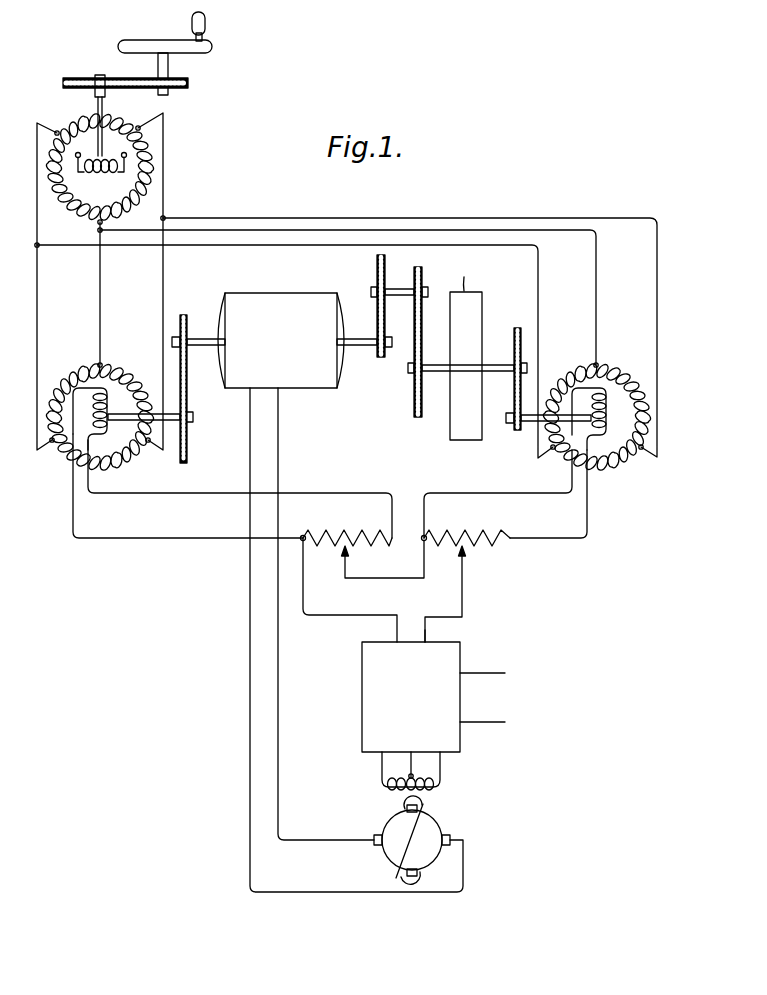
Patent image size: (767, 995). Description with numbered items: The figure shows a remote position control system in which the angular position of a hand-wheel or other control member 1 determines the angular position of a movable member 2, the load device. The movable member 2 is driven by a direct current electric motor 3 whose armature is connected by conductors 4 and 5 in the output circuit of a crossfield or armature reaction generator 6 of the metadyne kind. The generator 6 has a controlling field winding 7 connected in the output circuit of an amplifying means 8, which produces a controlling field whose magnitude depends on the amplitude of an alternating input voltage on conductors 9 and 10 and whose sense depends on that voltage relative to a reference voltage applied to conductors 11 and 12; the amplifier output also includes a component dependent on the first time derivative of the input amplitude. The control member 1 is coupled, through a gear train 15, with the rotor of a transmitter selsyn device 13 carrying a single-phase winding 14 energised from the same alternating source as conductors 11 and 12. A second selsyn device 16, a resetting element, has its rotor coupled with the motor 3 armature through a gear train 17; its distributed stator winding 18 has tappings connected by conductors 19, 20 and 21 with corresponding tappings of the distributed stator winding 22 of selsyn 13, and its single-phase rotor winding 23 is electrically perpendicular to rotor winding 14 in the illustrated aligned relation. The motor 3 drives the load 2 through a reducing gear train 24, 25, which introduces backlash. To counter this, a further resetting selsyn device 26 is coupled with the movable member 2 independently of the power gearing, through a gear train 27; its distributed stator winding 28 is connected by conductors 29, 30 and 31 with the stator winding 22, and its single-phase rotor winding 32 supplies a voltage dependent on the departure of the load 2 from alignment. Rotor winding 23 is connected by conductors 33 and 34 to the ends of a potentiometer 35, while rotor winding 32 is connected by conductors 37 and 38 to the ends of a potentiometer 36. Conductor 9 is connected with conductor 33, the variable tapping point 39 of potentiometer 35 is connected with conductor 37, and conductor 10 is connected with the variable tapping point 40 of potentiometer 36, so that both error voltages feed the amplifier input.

The control member 1 is at (213, 47).
The movable member 2 is at (478, 305).
The direct current electric motor 3 is at (305, 340).
The conductor 4 is at (278, 452).
The conductor 5 is at (250, 452).
The crossfield generator 6 is at (412, 840).
The controlling field winding 7 is at (441, 788).
The amplifying means 8 is at (433, 697).
The conductor 9 is at (397, 631).
The conductor 10 is at (425, 632).
The conductor 11 is at (495, 673).
The conductor 12 is at (484, 722).
The selsyn device 13 is at (117, 169).
The single-phase winding 14 is at (106, 157).
The gear train 15 is at (150, 89).
The second selsyn device 16 is at (118, 410).
The gear train 17 is at (186, 356).
The distributed stator winding 18 is at (120, 368).
The conductor 19 is at (37, 268).
The conductor 20 is at (100, 268).
The conductor 21 is at (163, 268).
The distributed stator winding 22 is at (69, 124).
The single-phase rotor winding 23 is at (123, 455).
The reducing gear train 24 is at (378, 325).
The reducing gear train 25 is at (420, 308).
The selsyn device 26 is at (620, 417).
The gear train 27 is at (513, 392).
The distributed stator winding 28 is at (648, 397).
The conductor 29 is at (538, 298).
The conductor 30 is at (596, 293).
The conductor 31 is at (657, 292).
The single-phase winding 32 is at (607, 397).
The conductor 33 is at (183, 538).
The conductor 34 is at (208, 494).
The potentiometer 35 is at (344, 535).
The potentiometer 36 is at (472, 535).
The conductor 37 is at (572, 480).
The conductor 38 is at (587, 529).
The variable tapping point 39 is at (343, 553).
The variable tapping point 40 is at (465, 553).